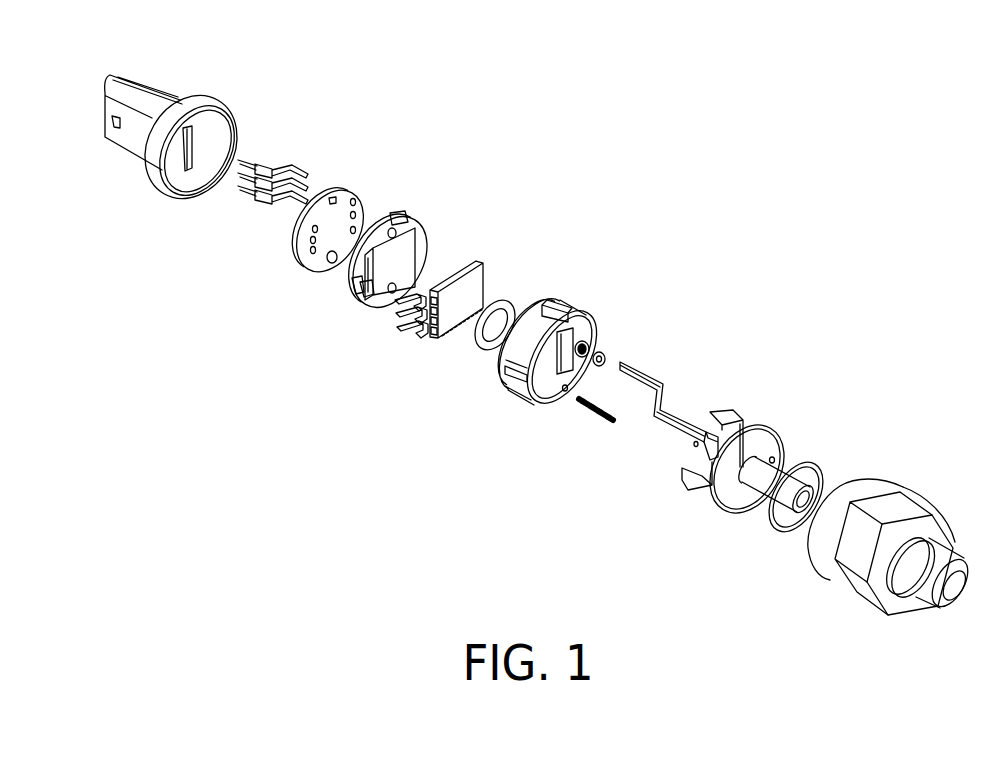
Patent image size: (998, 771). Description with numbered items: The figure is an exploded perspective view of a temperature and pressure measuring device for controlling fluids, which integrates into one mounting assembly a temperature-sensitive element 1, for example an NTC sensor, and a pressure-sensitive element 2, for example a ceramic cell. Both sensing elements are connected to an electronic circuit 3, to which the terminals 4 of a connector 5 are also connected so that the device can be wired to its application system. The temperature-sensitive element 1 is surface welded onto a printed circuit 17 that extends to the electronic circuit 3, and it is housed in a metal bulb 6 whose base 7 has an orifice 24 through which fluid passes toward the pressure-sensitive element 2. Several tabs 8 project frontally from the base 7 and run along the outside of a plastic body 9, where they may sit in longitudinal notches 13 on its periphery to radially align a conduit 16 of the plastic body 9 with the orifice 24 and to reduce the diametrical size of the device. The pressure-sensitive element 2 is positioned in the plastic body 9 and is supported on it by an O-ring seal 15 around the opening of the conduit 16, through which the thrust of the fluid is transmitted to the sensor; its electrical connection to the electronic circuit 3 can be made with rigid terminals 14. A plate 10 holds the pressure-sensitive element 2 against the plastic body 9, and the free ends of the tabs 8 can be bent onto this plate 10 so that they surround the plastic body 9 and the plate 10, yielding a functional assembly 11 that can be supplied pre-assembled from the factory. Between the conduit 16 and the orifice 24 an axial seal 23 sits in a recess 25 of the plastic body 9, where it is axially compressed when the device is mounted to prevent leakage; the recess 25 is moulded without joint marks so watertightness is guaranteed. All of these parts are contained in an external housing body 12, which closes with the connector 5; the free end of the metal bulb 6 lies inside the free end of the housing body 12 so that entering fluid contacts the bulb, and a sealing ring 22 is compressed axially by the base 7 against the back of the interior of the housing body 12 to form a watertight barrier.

The temperature-sensitive element 1 is at (696, 445).
The pressure-sensitive element 2 is at (468, 292).
The electronic circuit 3 is at (333, 222).
The terminals 4 is at (259, 198).
The connector 5 is at (191, 106).
The metal bulb 6 is at (793, 490).
The base 7 is at (760, 445).
The tabs 8 is at (693, 474).
The plastic body 9 is at (563, 308).
The plate 10 is at (399, 226).
The functional assembly 11 is at (461, 368).
The external housing body 12 is at (852, 562).
The longitudinal notches 13 is at (520, 370).
The rigid terminals 14 is at (403, 328).
The O-ring seal 15 is at (504, 300).
The conduit 16 is at (584, 348).
The printed circuit 17 is at (656, 420).
The sealing ring 22 is at (822, 470).
The axial seal 23 is at (607, 358).
The orifice 24 is at (775, 458).
The recess 25 is at (577, 367).